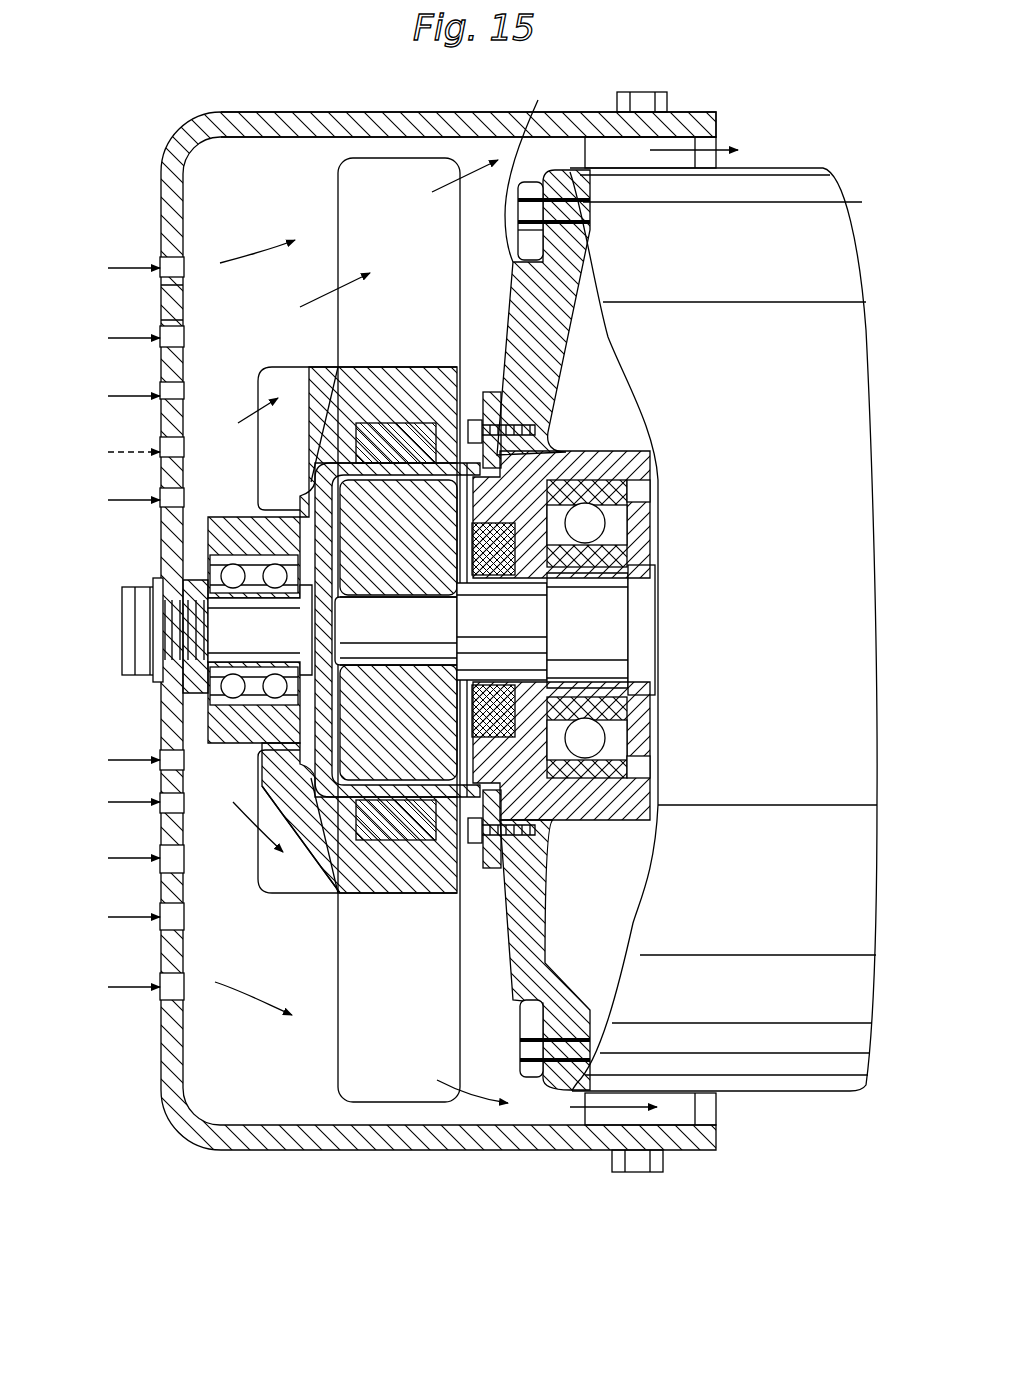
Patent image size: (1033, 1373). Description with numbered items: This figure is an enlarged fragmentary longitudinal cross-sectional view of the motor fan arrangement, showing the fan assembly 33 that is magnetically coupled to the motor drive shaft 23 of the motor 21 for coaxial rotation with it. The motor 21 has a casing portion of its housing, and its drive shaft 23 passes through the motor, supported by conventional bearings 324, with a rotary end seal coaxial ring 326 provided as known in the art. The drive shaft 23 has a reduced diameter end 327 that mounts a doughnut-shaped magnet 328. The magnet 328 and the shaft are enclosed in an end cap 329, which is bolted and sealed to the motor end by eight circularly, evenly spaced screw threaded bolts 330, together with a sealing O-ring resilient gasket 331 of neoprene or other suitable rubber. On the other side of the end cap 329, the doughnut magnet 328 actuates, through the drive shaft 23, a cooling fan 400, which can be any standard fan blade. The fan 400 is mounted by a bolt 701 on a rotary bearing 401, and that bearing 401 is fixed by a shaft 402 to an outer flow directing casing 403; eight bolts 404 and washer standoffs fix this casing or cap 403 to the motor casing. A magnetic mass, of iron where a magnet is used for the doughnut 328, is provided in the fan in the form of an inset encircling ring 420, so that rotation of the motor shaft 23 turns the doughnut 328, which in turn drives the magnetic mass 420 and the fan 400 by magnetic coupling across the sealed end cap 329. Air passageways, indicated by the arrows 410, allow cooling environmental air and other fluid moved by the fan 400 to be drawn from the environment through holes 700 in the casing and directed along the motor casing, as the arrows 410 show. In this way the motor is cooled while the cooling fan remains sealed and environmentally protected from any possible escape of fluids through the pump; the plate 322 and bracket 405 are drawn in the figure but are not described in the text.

The motor 21 is at (822, 168).
The motor drive shaft 23 is at (603, 620).
The fan assembly 33 is at (312, 1104).
The wheel plate 322 is at (547, 575).
The bearings 324 is at (617, 504).
The rotary end seal coaxial ring 326 is at (548, 693).
The reduced diameter end 327 is at (418, 627).
The doughnut-shaped magnet 328 is at (360, 512).
The end cap 329 is at (307, 367).
The screw threaded bolts 330 is at (515, 410).
The O-ring resilient gasket 331 is at (508, 800).
The cooling fan 400 is at (282, 893).
The rotary bearing 401 is at (208, 568).
The shaft 402 is at (233, 634).
The outer flow directing casing 403 is at (282, 112).
The bolts 404 is at (645, 102).
The bracket 405 is at (690, 150).
The arrows 410 is at (258, 255).
The inset encircling ring 420 is at (318, 893).
The holes 700 is at (183, 386).
The bolt 701 is at (177, 623).